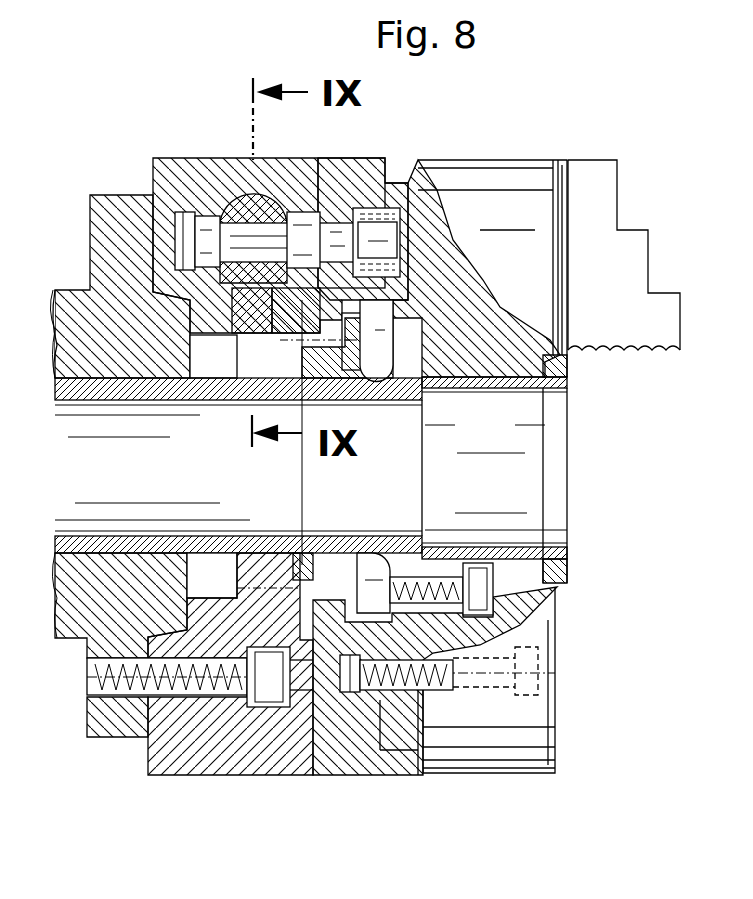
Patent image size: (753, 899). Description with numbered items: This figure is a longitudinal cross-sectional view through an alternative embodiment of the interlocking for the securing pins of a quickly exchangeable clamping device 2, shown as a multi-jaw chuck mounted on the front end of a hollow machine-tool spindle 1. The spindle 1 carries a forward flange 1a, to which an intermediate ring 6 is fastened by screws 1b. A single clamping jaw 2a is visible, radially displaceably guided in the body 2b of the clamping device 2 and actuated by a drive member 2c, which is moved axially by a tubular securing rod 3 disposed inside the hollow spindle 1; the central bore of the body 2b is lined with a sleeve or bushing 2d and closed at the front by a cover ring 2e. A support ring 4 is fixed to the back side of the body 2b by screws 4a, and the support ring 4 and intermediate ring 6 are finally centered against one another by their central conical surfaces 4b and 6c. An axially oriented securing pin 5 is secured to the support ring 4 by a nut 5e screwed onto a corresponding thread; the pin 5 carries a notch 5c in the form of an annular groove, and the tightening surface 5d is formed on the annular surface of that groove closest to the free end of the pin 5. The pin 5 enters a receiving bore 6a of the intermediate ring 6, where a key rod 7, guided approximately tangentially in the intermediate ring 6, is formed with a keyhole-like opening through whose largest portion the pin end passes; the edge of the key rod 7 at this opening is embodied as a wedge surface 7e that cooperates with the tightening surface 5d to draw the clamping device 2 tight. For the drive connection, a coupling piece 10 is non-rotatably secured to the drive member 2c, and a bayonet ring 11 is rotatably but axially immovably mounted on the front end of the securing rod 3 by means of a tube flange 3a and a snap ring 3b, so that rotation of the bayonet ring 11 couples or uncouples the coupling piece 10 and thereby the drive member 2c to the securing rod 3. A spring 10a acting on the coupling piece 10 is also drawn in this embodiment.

The machine-tool spindle 1 is at (86, 620).
The flange 1a is at (137, 216).
The screws 1b is at (234, 693).
The clamping device 2 is at (495, 186).
The clamping jaw 2a is at (623, 248).
The body 2b is at (540, 318).
The drive member 2c is at (481, 365).
The sleeve or bushing 2d is at (507, 547).
The cover ring 2e is at (569, 557).
The securing rod 3 is at (93, 383).
The tube flange 3a is at (252, 396).
The snap ring 3b is at (293, 553).
The support ring 4 is at (341, 753).
The screws 4a is at (441, 690).
The central conical surface 4b is at (362, 382).
The securing pin 5 is at (340, 233).
The notch 5c is at (320, 160).
The tightening surface 5d is at (232, 280).
The nut 5e is at (417, 163).
The intermediate ring 6 is at (281, 747).
The receiving bore 6a is at (170, 264).
The central conical surface 6c is at (347, 695).
The key rod 7 is at (256, 191).
The wedge surface 7e is at (210, 220).
The coupling piece 10 is at (394, 560).
The detent spring 10a is at (480, 592).
The bayonet ring 11 is at (313, 555).